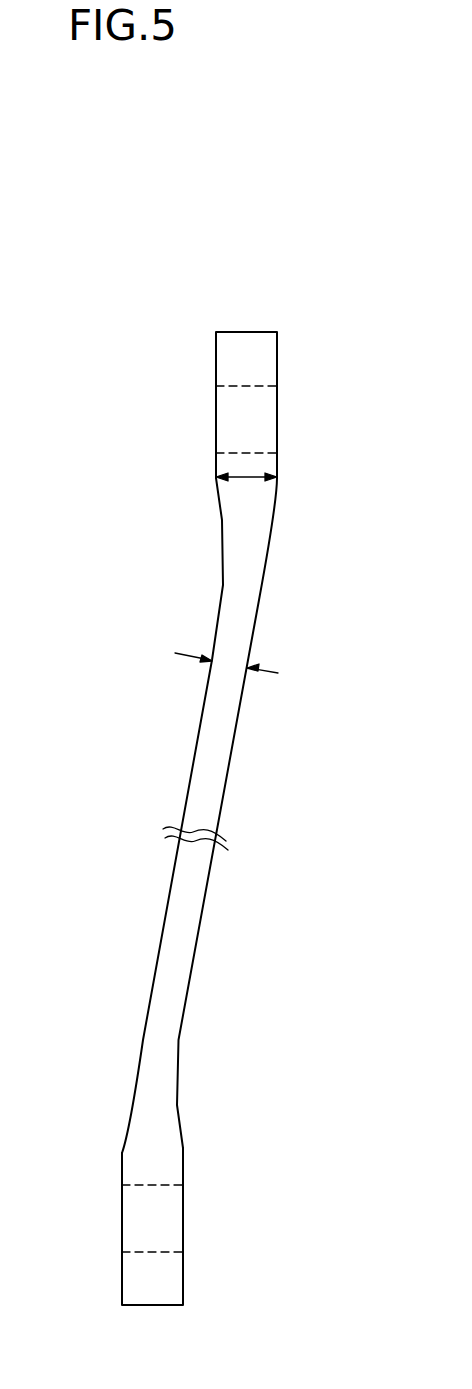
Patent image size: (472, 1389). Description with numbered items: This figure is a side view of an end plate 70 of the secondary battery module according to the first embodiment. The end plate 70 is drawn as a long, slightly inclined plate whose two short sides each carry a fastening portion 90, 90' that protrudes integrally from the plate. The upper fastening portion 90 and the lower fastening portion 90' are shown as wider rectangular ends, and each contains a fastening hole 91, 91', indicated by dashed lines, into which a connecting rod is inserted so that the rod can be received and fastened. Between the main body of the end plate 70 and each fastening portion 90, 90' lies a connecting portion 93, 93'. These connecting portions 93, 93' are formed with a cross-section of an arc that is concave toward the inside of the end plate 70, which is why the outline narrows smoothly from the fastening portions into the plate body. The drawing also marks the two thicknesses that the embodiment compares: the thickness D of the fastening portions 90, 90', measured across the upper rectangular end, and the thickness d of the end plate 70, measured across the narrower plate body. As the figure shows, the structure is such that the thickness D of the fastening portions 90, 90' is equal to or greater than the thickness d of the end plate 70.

The end plate 70 is at (179, 815).
The fastening portion 90 is at (246, 374).
The fastening hole 91 is at (279, 419).
The connecting portion 93 is at (270, 569).
The connecting portion 93' is at (121, 1096).
The fastening hole 91' is at (120, 1218).
The fastening portion 90' is at (152, 1259).
The thickness of fastening portion D is at (246, 491).
The thickness of end plate d is at (226, 665).